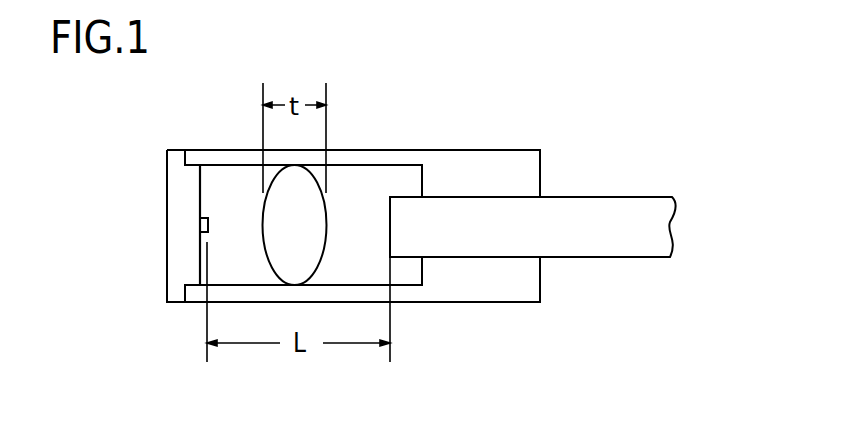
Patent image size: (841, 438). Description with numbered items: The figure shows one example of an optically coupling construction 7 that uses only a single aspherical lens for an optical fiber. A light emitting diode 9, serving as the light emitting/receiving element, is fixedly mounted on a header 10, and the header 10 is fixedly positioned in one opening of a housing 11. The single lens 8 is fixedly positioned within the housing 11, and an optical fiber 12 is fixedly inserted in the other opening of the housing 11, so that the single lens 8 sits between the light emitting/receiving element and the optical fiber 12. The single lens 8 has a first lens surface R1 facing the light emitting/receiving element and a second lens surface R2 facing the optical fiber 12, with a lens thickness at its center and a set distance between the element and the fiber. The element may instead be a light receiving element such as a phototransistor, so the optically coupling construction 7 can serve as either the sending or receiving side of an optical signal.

The optically coupling construction 7 is at (505, 148).
The single lens 8 is at (312, 250).
The light emitting diode 9 is at (202, 210).
The header 10 is at (175, 267).
The housing 11 is at (490, 287).
The optical fiber 12 is at (602, 248).
The first lens surface R1 is at (253, 198).
The second lens surface R2 is at (333, 196).